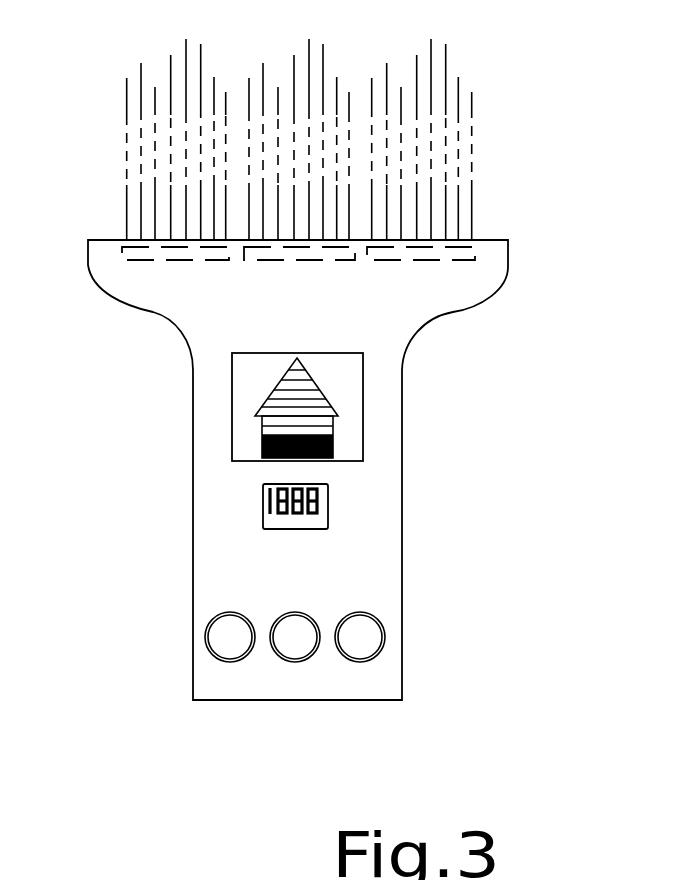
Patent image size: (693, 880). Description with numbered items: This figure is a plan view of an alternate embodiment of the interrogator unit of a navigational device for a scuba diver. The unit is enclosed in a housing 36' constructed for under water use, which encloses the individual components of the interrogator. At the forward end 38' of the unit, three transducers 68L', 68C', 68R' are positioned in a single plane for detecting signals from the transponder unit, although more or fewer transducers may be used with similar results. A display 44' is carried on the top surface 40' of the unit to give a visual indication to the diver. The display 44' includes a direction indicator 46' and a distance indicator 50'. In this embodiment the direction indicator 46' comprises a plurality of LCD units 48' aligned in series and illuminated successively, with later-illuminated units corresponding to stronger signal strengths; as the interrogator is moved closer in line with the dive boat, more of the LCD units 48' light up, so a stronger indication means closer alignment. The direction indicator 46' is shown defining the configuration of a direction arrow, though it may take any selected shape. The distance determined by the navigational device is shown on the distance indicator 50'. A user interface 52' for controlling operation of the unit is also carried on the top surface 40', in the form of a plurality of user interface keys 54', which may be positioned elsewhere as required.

The housing 36' is at (316, 399).
The forward end 38' is at (344, 231).
The top surface 40' is at (337, 535).
The display 44' is at (352, 407).
The direction indicator 46' is at (369, 408).
The LCD units 48' is at (224, 404).
The distance indicator 50' is at (369, 513).
The user interface 52' is at (343, 653).
The user interface keys 54' is at (297, 699).
The transducers 68L' is at (130, 198).
The transducers 68C' is at (299, 185).
The transducers 68R' is at (453, 195).